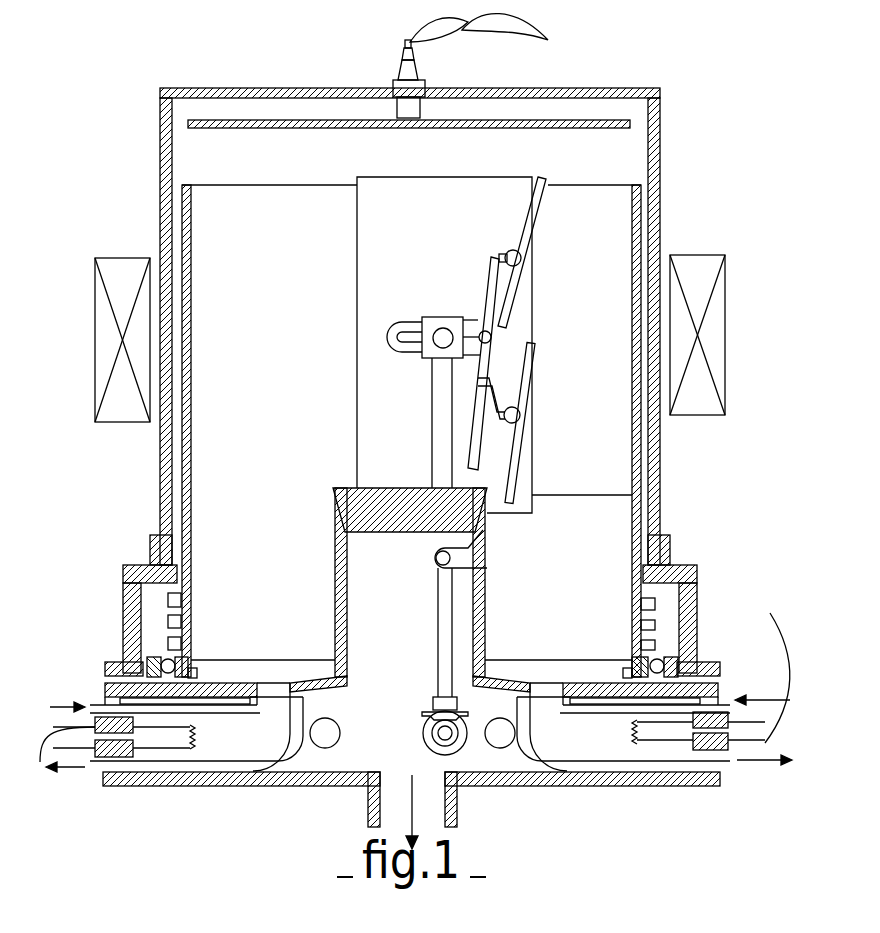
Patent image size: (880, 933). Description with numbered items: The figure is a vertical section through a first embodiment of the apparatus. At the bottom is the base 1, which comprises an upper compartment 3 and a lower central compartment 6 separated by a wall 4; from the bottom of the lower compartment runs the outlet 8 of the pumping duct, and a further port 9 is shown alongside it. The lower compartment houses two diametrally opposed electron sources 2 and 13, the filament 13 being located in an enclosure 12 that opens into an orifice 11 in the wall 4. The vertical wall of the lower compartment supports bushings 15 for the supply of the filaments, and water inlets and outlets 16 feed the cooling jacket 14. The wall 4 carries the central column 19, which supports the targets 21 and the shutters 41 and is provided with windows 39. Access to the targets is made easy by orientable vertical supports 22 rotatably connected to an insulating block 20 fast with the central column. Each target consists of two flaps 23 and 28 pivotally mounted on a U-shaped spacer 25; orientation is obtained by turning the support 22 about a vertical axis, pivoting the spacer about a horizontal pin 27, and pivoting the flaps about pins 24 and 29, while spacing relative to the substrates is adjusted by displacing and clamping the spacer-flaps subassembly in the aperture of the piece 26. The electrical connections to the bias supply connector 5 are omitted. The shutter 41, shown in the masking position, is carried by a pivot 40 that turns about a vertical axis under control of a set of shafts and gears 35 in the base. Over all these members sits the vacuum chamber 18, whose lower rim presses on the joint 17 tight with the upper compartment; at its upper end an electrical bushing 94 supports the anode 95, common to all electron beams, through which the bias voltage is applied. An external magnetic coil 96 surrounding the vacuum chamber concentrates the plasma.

The base 1 is at (697, 587).
The electron source 2 is at (183, 735).
The upper compartment 3 is at (258, 697).
The wall 4 is at (320, 635).
The bias supply connector 5 is at (373, 738).
The lower central compartment 6 is at (318, 746).
The outlet of the pumping duct 8 is at (450, 778).
The port 9 is at (508, 746).
The orifice 11 is at (593, 733).
The enclosure 12 is at (640, 733).
The filament 13 is at (700, 782).
The cooling jacket 14 is at (715, 688).
The bushing 15 is at (67, 778).
The water inlets and outlets 16 is at (763, 651).
The joint 17 is at (485, 606).
The vacuum chamber 18 is at (165, 160).
The central column 19 is at (333, 590).
The insulating block 20 is at (343, 534).
The target 21 is at (336, 538).
The orientable vertical support 22 is at (440, 467).
The flap 23 is at (505, 460).
The pin 24 is at (473, 408).
The U-shaped spacer 25 is at (422, 363).
The piece 26 is at (393, 327).
The horizontal pin 27 is at (483, 337).
The flap 28 is at (519, 253).
The pin 29 is at (540, 213).
The set of shafts and gears 35 is at (443, 620).
The window 39 is at (448, 553).
The pivot 40 is at (458, 564).
The shutter 41 is at (480, 197).
The electrical bushing 94 is at (403, 93).
The anode 95 is at (340, 122).
The external magnetic coil 96 is at (705, 270).